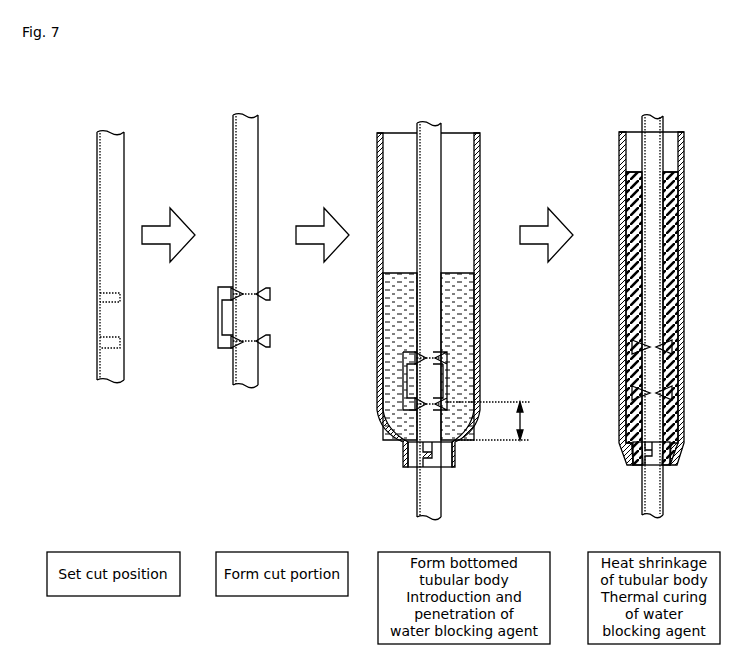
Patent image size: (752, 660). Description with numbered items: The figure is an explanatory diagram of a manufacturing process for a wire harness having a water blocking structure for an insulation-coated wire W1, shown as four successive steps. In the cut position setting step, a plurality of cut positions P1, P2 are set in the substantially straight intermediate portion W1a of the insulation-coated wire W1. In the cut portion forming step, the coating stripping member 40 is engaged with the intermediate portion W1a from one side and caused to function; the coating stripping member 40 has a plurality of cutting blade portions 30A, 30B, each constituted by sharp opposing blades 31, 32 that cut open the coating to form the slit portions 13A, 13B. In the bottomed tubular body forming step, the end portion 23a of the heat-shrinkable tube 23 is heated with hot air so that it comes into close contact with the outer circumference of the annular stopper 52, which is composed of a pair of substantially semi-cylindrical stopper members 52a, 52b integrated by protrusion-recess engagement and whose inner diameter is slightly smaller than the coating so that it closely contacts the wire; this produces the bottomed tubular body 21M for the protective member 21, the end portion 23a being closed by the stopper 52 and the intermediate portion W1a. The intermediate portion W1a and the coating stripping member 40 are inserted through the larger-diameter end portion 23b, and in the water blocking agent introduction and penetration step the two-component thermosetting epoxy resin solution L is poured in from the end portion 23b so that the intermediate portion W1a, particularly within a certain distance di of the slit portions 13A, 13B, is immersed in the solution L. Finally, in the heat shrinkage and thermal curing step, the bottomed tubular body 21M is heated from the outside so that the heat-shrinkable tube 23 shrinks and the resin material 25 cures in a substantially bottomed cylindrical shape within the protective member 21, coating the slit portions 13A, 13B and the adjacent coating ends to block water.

The insulation-coated wire W1 is at (97, 165).
The intermediate portion of the insulation-coated wire W1a is at (100, 318).
The cut position P1 is at (104, 293).
The cut position P2 is at (104, 348).
The slit portion 13A is at (243, 342).
The slit portion 13B is at (256, 293).
The protective member 21 is at (692, 236).
The bottomed tubular body 21M is at (392, 458).
The heat-shrinkable tube 23 is at (480, 302).
The end portion of the heat-shrinkable tube 23a is at (458, 447).
The larger-diameter end portion of the heat-shrinkable tube 23b is at (480, 152).
The resin material 25 is at (684, 305).
The cutting blade portion 30A is at (210, 358).
The cutting blade portion 30B is at (282, 294).
The opposing blade 31 is at (222, 291).
The opposing blade 32 is at (268, 299).
The coating stripping member 40 is at (210, 314).
The stopper 52 is at (413, 468).
The stopper member 52a is at (430, 480).
The stopper member 52b is at (445, 468).
The thermosetting epoxy resin solution L is at (462, 273).
The distance di is at (493, 421).